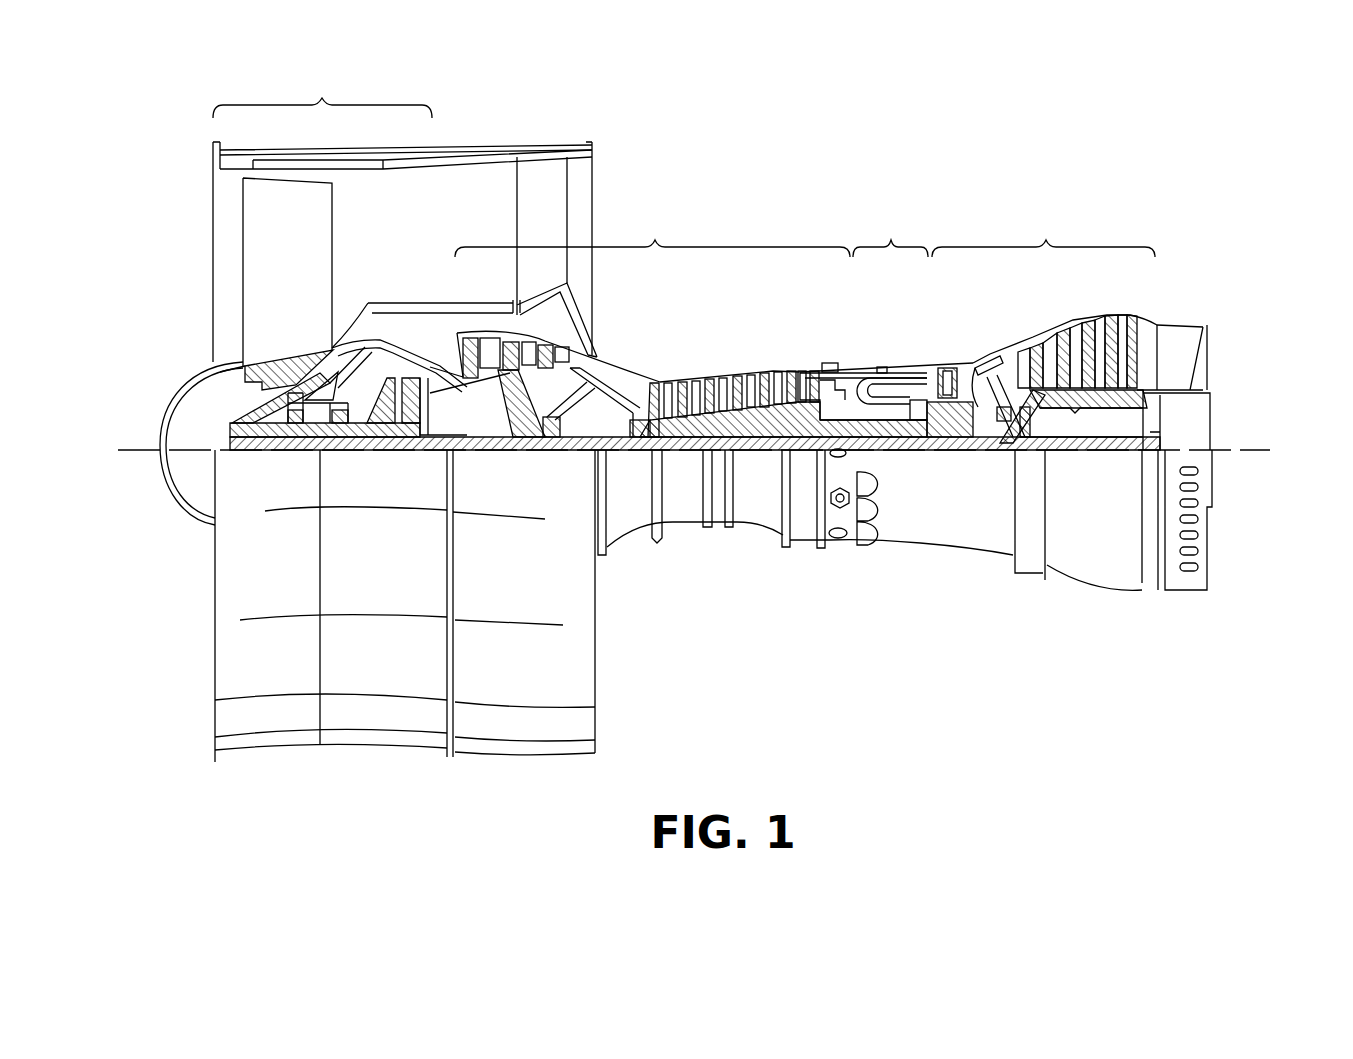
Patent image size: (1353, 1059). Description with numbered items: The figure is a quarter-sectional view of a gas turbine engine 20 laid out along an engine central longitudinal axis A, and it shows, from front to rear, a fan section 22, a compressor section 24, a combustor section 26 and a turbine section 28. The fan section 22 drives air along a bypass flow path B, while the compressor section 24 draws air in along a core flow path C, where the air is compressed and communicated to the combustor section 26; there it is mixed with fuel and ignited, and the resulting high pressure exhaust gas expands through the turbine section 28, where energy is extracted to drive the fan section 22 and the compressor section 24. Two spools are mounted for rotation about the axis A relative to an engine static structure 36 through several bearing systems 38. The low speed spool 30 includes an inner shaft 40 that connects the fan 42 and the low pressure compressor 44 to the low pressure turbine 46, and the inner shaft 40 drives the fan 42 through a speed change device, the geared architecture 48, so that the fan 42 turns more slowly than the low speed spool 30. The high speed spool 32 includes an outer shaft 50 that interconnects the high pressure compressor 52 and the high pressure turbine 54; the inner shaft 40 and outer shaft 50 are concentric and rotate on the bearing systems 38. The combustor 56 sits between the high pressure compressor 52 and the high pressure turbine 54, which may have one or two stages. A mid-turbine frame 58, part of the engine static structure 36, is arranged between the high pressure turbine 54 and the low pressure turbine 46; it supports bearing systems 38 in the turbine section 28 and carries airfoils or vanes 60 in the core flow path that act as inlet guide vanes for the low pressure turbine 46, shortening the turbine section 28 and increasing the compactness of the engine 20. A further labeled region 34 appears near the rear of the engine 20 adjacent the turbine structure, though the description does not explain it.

The gas turbine engine 20 is at (964, 174).
The fan section 22 is at (322, 95).
The compressor section 24 is at (652, 234).
The combustor section 26 is at (890, 234).
The turbine section 28 is at (1043, 234).
The low speed spool 30 is at (764, 462).
The high speed spool 32 is at (800, 380).
The turbine exhaust case 34 is at (1081, 420).
The engine static structure 36 is at (798, 546).
The bearing systems 38 is at (292, 425).
The inner shaft 40 is at (607, 452).
The fan 42 is at (276, 284).
The low pressure compressor section 44 is at (527, 345).
The low pressure turbine section 46 is at (1094, 316).
The geared architecture 48 is at (405, 422).
The outer shaft 50 is at (888, 440).
The high pressure compressor section 52 is at (723, 370).
The high pressure turbine section 54 is at (938, 350).
The combustor 56 is at (880, 387).
The mid-turbine frame 58 is at (999, 340).
The airfoils/vanes 60 is at (1000, 372).
The engine central longitudinal axis A is at (1272, 448).
The bypass flow path B is at (473, 227).
The core flow path C is at (395, 340).